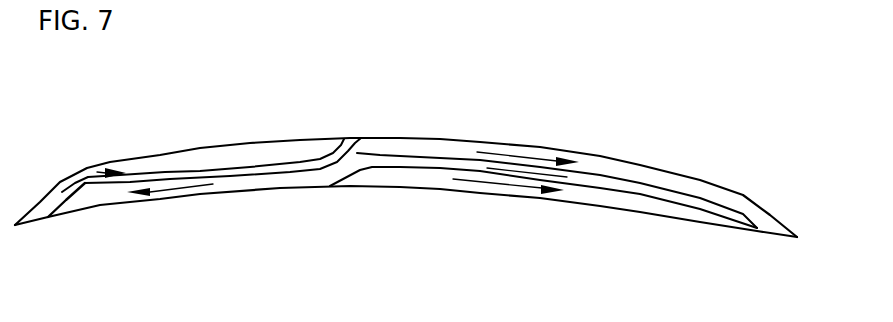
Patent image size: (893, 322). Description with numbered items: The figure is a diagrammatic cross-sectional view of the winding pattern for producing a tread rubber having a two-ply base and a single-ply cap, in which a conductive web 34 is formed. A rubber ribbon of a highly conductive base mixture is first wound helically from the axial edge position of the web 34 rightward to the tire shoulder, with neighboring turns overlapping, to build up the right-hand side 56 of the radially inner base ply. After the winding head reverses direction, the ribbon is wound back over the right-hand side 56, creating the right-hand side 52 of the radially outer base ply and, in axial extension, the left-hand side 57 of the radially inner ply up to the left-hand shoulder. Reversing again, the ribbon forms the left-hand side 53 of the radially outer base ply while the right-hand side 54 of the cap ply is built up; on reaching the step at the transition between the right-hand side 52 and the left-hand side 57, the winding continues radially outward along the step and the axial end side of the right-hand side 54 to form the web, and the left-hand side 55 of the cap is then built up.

The web 34 is at (347, 152).
The right-hand side of the radially outer ply of the base layer 52 is at (653, 190).
The left-hand side of the radially outer ply of the base layer 53 is at (200, 173).
The right-hand side of the cap ply 54 is at (597, 165).
The left-hand side of the cap 55 is at (303, 150).
The right-hand side of the radially inner ply 56 is at (610, 200).
The left-hand side of the radially inner ply of the base layer 57 is at (257, 182).